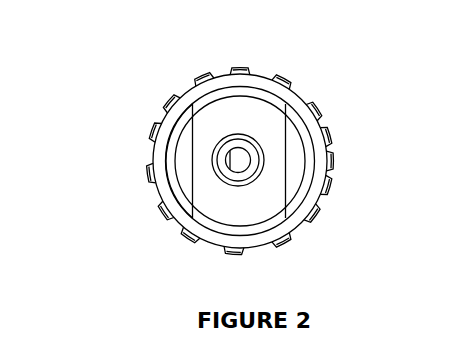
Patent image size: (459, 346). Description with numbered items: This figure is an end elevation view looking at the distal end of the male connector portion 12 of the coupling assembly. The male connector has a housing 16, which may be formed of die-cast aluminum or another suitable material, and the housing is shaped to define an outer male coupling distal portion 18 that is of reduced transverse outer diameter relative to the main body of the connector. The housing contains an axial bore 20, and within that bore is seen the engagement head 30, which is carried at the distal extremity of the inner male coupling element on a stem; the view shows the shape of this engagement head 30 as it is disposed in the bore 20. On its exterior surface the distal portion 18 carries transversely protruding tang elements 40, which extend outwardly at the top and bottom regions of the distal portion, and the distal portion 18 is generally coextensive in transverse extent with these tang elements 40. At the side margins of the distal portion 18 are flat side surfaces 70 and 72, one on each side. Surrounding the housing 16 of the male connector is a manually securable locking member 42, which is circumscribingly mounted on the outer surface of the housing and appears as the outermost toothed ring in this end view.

The male connector portion 12 is at (302, 80).
The housing 16 is at (317, 180).
The outer male coupling distal portion 18 is at (193, 130).
The axial bore 20 is at (226, 158).
The engagement head 30 is at (243, 159).
The tang elements 40 is at (293, 88).
The locking member 42 is at (237, 80).
The flat side surface 70 is at (190, 183).
The flat side surface 72 is at (286, 198).